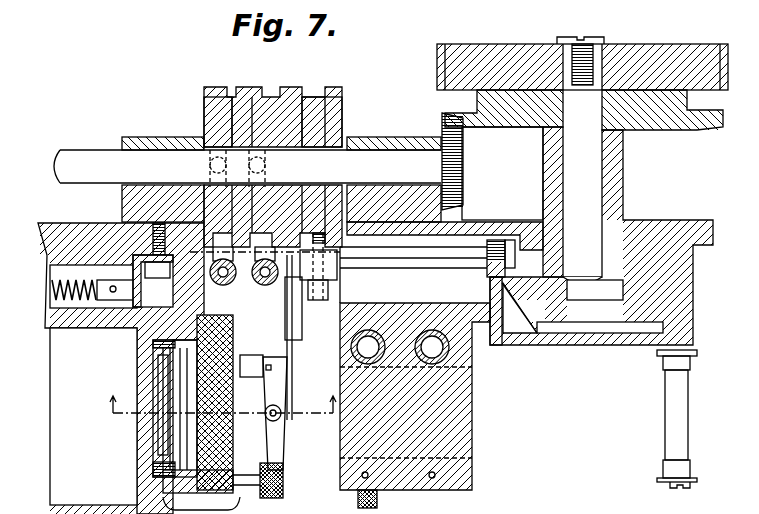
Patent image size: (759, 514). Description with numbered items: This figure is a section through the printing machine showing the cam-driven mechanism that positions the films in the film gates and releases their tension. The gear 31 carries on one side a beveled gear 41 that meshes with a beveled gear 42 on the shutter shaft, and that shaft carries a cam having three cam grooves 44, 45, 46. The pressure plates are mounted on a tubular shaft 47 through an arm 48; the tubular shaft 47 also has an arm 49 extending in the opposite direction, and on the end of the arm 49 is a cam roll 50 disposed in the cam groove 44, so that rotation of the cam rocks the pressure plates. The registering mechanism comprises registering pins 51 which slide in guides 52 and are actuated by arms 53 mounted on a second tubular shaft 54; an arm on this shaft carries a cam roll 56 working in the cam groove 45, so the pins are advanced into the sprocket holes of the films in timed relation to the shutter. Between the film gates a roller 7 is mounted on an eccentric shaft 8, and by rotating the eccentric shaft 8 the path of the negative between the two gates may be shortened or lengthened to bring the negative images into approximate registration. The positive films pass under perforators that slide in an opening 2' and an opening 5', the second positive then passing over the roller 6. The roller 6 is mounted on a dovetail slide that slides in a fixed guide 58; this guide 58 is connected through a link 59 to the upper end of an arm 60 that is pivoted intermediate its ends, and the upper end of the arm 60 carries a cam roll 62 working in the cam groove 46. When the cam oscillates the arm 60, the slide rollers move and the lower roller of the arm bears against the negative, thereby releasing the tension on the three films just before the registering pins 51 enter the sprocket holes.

The gear 31 is at (493, 55).
The beveled gear 41 is at (509, 115).
The beveled gear 42 is at (447, 143).
The cam groove 44 is at (226, 92).
The cam groove 45 is at (271, 90).
The cam groove 46 is at (315, 97).
The arm 49 is at (220, 248).
The cam roll 50 is at (217, 160).
The cam roll 56 is at (266, 166).
The arm 48 is at (217, 300).
The tubular shaft 47 is at (228, 286).
The tubular shaft 54 is at (266, 286).
The guide 52 is at (242, 360).
The registering pin 51 is at (163, 357).
The eccentric shaft 8 is at (165, 460).
The roller 7 is at (153, 467).
The arm 53 is at (282, 378).
The arm 60 is at (335, 278).
The cam roll 62 is at (350, 236).
The link 59 is at (437, 258).
The opening 5' is at (415, 392).
The opening 2' is at (465, 352).
The fixed guide 58 is at (593, 345).
The roller 6 is at (684, 395).